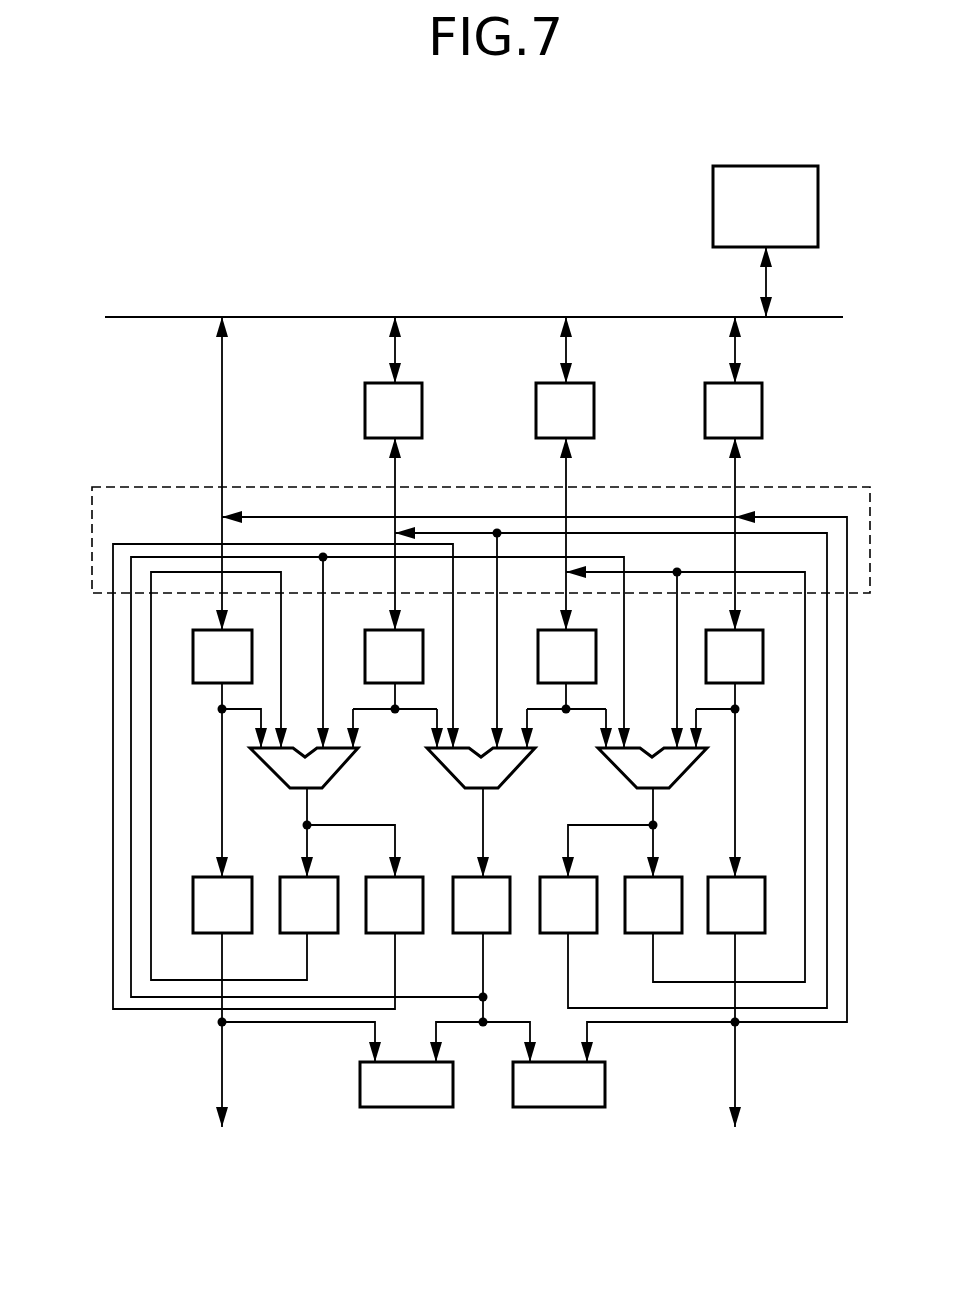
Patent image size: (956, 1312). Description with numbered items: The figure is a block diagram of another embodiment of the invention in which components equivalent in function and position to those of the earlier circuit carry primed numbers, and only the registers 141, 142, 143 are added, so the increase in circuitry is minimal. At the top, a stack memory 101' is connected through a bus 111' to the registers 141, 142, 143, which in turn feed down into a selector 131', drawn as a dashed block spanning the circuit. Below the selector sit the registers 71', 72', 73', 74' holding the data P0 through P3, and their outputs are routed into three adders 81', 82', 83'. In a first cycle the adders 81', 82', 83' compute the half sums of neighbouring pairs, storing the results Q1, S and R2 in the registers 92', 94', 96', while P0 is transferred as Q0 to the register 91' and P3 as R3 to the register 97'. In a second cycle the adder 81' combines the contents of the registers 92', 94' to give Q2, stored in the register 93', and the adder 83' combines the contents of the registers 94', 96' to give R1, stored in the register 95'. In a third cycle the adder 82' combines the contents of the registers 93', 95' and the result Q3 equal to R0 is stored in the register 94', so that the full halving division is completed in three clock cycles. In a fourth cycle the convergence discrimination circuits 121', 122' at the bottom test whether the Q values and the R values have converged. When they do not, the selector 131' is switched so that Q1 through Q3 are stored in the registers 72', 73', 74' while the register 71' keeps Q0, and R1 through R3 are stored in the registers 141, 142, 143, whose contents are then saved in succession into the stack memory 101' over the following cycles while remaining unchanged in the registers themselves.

The stack memory 101' is at (765, 210).
The bus 111' is at (474, 283).
The selector 131' is at (481, 510).
The register 141 is at (422, 405).
The register 142 is at (594, 405).
The register 143 is at (762, 405).
The register 71' is at (210, 689).
The register 72' is at (375, 640).
The register 73' is at (547, 640).
The register 74' is at (750, 689).
The adder 81' is at (326, 777).
The adder 82' is at (500, 778).
The adder 83' is at (662, 787).
The register 91' is at (205, 885).
The register 92' is at (327, 927).
The register 93' is at (413, 927).
The register 94' is at (502, 927).
The register 95' is at (587, 927).
The register 96' is at (675, 927).
The register 97' is at (751, 877).
The convergence discrimination circuit 121' is at (357, 1084).
The convergence discrimination circuit 122' is at (605, 1084).